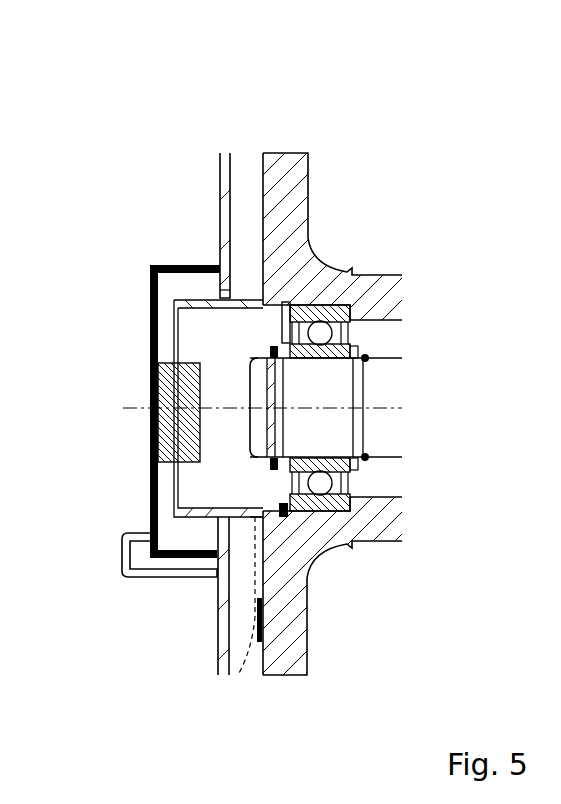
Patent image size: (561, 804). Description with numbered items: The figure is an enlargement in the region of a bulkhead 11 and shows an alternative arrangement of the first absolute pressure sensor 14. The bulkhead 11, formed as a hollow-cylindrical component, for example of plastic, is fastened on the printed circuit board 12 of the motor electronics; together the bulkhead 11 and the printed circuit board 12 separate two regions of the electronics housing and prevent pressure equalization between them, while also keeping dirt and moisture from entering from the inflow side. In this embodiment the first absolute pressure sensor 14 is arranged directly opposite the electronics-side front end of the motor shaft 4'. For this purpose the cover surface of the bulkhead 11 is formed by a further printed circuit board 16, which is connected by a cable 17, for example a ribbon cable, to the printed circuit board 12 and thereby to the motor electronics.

The bulkhead 11 is at (185, 263).
The printed circuit board 12 is at (222, 142).
The first absolute pressure sensor 14 is at (153, 358).
The printed circuit board 16 is at (152, 462).
The cable 17 is at (180, 578).
The motor shaft 4' is at (360, 392).